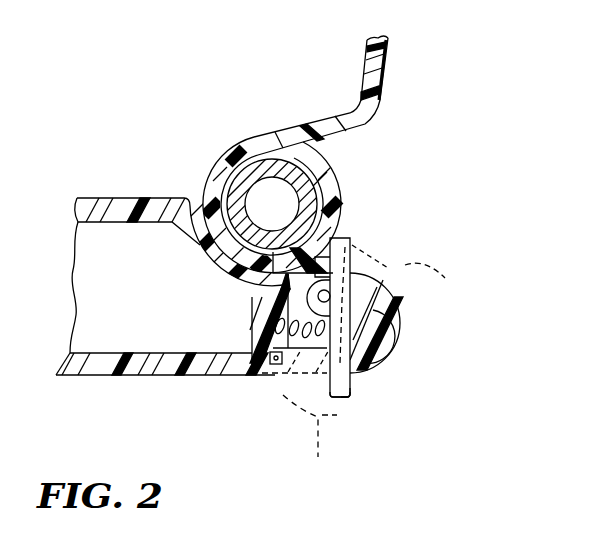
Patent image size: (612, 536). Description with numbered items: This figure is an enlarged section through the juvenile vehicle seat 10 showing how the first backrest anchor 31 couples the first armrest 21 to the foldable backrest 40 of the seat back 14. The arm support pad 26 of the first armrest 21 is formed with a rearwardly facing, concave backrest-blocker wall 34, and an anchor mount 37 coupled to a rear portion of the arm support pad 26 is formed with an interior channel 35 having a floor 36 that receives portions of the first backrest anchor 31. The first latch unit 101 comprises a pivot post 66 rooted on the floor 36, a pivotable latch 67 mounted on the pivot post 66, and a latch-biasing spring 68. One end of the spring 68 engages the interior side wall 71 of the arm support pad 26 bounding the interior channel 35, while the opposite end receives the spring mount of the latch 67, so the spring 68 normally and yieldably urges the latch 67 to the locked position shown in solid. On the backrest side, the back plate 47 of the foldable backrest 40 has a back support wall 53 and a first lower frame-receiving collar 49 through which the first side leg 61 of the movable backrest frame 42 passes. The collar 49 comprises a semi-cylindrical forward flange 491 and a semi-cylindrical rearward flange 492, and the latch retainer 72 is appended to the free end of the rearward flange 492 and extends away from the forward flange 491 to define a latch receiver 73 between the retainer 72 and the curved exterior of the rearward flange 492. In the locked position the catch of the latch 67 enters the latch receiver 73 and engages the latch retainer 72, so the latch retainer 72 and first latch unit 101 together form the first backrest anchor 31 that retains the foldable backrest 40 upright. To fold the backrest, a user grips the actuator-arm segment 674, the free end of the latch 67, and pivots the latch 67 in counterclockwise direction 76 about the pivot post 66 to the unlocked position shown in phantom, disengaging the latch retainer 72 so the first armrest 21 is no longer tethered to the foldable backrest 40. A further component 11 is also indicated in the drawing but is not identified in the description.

The juvenile vehicle seat 10 is at (414, 157).
The housing 11 is at (280, 441).
The seat back 14 is at (393, 67).
The first armrest 21 is at (102, 196).
The arm support pad 26 is at (93, 385).
The first backrest anchor 31 is at (426, 231).
The backrest-blocker wall 34 is at (193, 261).
The interior channel 35 is at (277, 394).
The floor 36 is at (292, 278).
The anchor mount 37 is at (436, 331).
The foldable backrest 40 is at (391, 99).
The movable backrest frame 42 is at (314, 164).
The back plate 47 is at (350, 58).
The first lower frame-receiving collar 49 is at (222, 150).
The back support wall 53 is at (369, 72).
The first side leg 61 is at (306, 192).
The pivot post 66 is at (314, 296).
The pivotable latch 67 is at (356, 383).
The latch-biasing spring 68 is at (344, 237).
The interior side wall 71 is at (272, 379).
The latch retainer 72 is at (347, 258).
The latch receiver 73 is at (344, 217).
The counterclockwise direction 76 is at (288, 398).
The first latch unit 101 is at (272, 383).
The semi-cylindrical forward flange 491 is at (212, 188).
The semi-cylindrical rearward flange 492 is at (323, 181).
The actuator-arm segment 674 is at (348, 391).